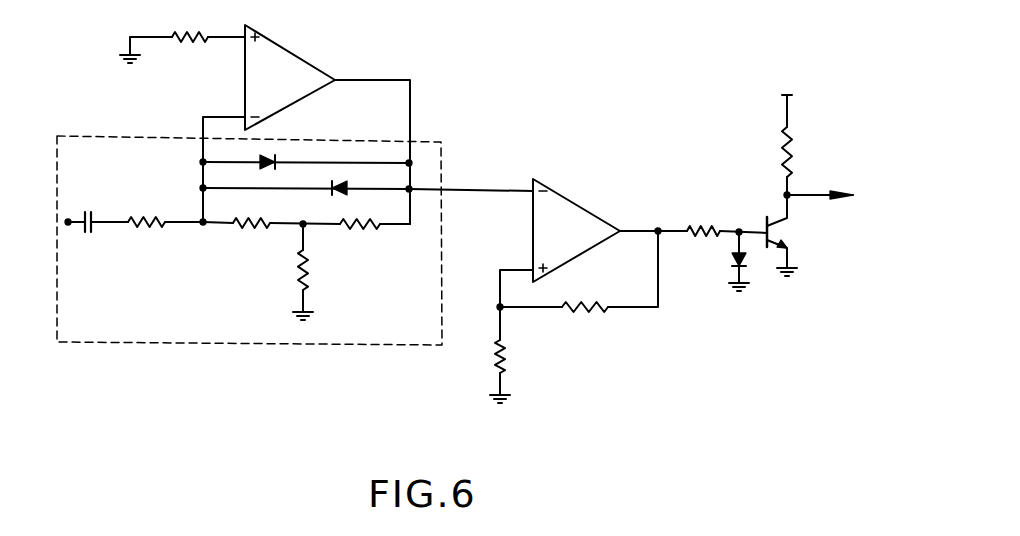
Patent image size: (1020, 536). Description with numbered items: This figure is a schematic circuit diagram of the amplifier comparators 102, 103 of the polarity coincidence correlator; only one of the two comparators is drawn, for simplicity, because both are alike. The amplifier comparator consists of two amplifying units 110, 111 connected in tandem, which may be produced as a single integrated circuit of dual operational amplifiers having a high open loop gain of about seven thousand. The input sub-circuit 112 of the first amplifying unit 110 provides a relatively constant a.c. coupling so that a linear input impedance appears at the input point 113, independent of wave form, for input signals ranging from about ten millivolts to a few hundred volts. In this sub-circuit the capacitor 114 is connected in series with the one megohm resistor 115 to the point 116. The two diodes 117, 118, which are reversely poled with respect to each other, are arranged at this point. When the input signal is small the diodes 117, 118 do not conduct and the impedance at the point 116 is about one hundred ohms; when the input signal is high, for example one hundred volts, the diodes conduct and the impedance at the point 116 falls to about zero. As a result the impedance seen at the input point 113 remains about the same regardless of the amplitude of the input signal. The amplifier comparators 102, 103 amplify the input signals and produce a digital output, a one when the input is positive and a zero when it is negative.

The amplifier comparator 102 is at (225, 352).
The amplifier comparator 103 is at (249, 262).
The amplifying unit 110 is at (424, 70).
The amplifying unit 111 is at (608, 185).
The input sub-circuit 112 is at (442, 163).
The input point 113 is at (67, 226).
The capacitor 114 is at (93, 234).
The one megohm resistor 115 is at (160, 229).
The point 116 is at (203, 229).
The diode 117 is at (265, 158).
The diode 118 is at (337, 185).